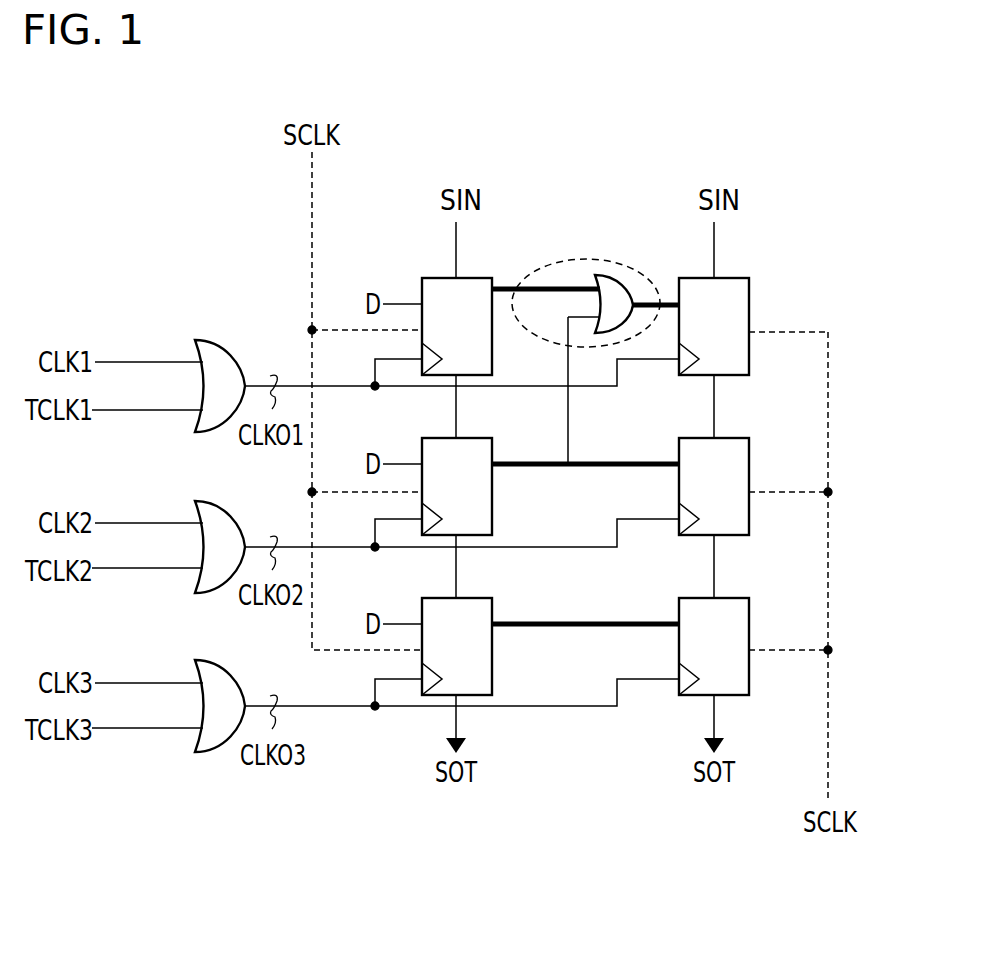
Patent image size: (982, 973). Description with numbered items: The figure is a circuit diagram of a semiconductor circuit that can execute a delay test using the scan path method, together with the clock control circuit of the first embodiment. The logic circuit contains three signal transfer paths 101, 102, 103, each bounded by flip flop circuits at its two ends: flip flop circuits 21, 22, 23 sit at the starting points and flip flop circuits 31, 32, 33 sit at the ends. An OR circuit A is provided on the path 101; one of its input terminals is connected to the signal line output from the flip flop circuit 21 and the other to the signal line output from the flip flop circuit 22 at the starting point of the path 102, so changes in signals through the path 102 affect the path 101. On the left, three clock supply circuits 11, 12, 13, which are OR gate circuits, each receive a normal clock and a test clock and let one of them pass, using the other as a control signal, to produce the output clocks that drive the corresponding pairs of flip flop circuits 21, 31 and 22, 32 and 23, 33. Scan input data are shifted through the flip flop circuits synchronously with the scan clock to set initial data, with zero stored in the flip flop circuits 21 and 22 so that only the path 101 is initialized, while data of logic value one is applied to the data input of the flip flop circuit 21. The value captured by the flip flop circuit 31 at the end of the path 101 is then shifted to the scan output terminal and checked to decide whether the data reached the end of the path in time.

The clock supply circuit 11 is at (218, 340).
The clock supply circuit 12 is at (218, 500).
The clock supply circuit 13 is at (218, 660).
The flip flop circuit 21 is at (481, 277).
The flip flop circuit 22 is at (490, 437).
The flip flop circuit 23 is at (490, 597).
The flip flop circuit 31 is at (736, 278).
The flip flop circuit 32 is at (736, 438).
The flip flop circuit 33 is at (736, 592).
The signal transfer path 101 is at (585, 335).
The signal transfer path 102 is at (597, 461).
The signal transfer path 103 is at (594, 621).
The OR circuit A is at (636, 279).